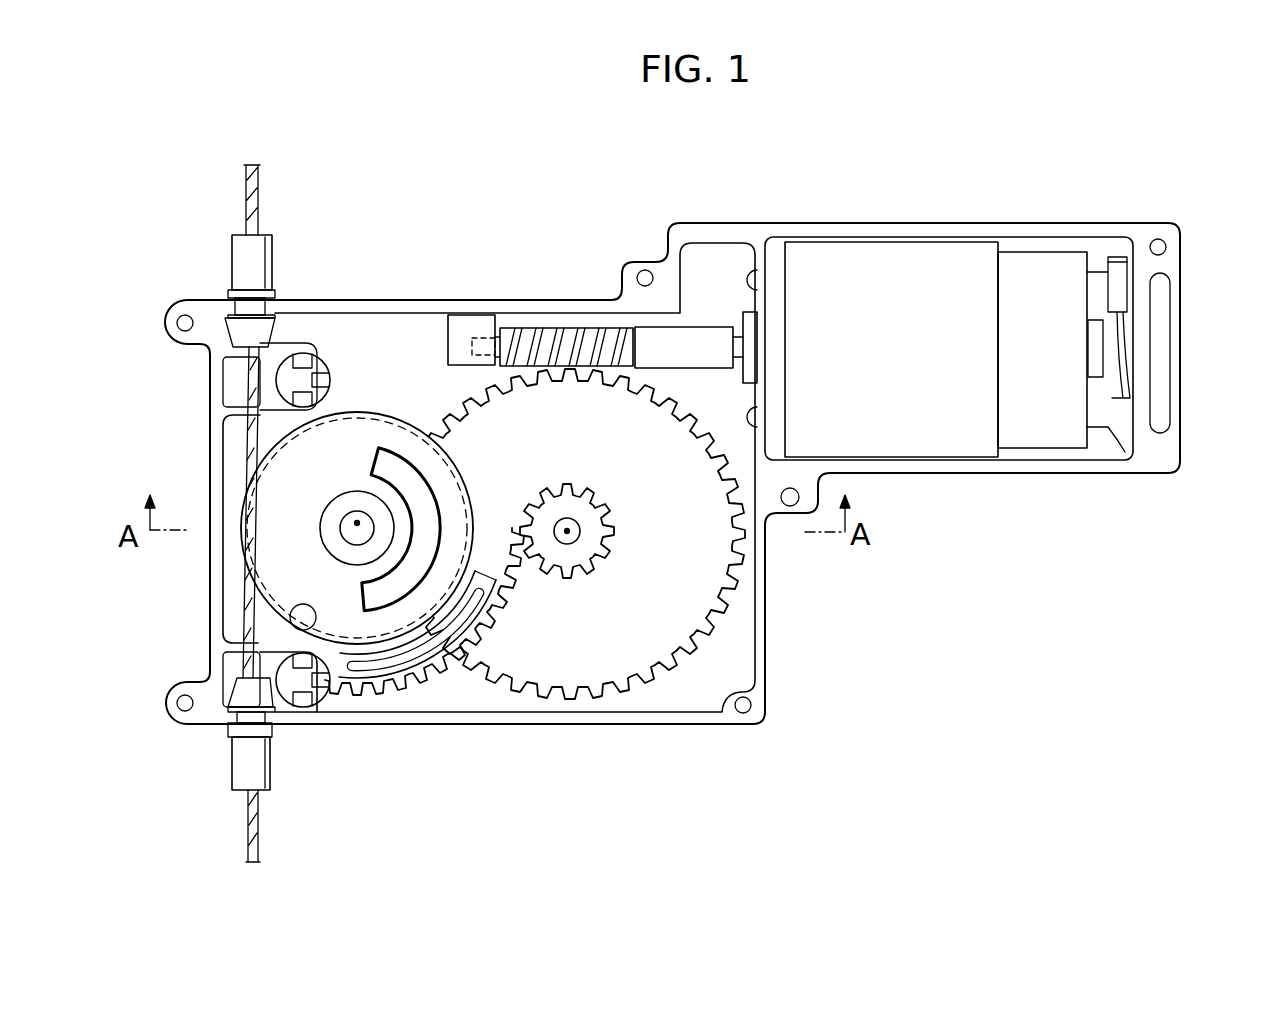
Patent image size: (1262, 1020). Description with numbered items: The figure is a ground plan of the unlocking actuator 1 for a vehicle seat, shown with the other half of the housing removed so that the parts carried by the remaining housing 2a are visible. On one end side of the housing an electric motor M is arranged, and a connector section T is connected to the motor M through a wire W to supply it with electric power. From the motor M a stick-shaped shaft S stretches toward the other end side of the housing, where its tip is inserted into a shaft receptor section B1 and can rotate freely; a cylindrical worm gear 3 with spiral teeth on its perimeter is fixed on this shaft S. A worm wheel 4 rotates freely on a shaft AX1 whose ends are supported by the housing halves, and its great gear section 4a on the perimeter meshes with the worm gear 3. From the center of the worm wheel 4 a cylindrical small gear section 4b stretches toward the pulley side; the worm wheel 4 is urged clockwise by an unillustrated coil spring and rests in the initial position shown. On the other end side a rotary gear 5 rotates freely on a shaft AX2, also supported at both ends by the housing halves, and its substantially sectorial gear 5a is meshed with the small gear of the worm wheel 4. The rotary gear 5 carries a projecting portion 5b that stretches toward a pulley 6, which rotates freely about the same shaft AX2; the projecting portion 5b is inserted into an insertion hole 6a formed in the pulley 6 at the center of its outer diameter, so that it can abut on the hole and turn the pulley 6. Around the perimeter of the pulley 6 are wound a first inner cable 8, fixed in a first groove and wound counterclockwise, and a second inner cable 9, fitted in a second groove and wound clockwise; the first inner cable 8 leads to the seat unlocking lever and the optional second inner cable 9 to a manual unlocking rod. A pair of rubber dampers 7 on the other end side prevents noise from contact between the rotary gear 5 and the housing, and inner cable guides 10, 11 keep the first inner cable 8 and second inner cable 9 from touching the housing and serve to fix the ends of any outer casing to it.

The unlocking actuator 1 is at (872, 772).
The housing 2a is at (768, 650).
The worm gear 3 is at (545, 330).
The worm wheel 4 is at (648, 642).
The great gear section 4a is at (577, 555).
The small gear section 4b is at (583, 558).
The rotary gear 5 is at (360, 448).
The sectorial gear 5a is at (423, 685).
The projecting portion 5b is at (393, 470).
The pulley 6 is at (272, 545).
The insertion hole 6a is at (418, 558).
The rubber damper 7 is at (320, 377).
The first inner cable 8 is at (250, 200).
The second inner cable 9 is at (250, 828).
The inner cable guide 10 is at (252, 268).
The inner cable guide 11 is at (247, 762).
The shaft receptor section B1 is at (473, 325).
The shaft S is at (740, 343).
The connector section T is at (1124, 300).
The wire W is at (1130, 378).
The motor M is at (928, 418).
The shaft AX1 is at (570, 532).
The shaft AX2 is at (357, 523).